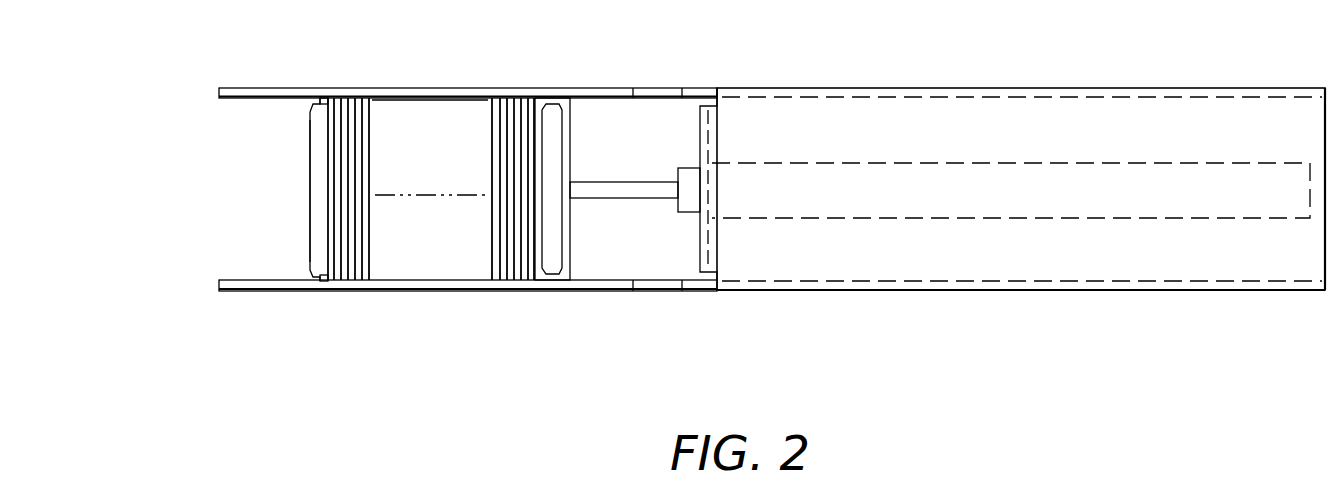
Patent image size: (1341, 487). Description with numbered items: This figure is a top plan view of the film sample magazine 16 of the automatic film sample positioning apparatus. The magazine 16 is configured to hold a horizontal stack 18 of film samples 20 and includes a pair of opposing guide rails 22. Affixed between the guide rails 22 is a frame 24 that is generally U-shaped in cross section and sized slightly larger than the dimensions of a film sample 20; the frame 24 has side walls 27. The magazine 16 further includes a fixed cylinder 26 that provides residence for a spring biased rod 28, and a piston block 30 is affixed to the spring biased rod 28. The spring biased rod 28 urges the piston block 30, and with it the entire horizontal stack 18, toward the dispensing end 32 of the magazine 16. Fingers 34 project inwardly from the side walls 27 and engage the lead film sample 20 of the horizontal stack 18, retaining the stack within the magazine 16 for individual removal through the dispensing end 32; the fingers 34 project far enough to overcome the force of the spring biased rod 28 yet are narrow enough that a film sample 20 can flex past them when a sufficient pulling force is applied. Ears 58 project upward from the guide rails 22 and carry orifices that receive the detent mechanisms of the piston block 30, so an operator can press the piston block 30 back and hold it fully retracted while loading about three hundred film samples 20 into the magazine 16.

The magazine 16 is at (985, 345).
The horizontal stack 18 is at (393, 250).
The film sample 20 is at (328, 230).
The guide rails 22 is at (250, 95).
The frame 24 is at (309, 163).
The fixed cylinder 26 is at (908, 215).
The side walls 27 is at (432, 106).
The spring biased rod 28 is at (612, 182).
The piston block 30 is at (553, 263).
The dispensing end 32 is at (237, 258).
The fingers 34 is at (322, 100).
The ears 58 is at (668, 88).